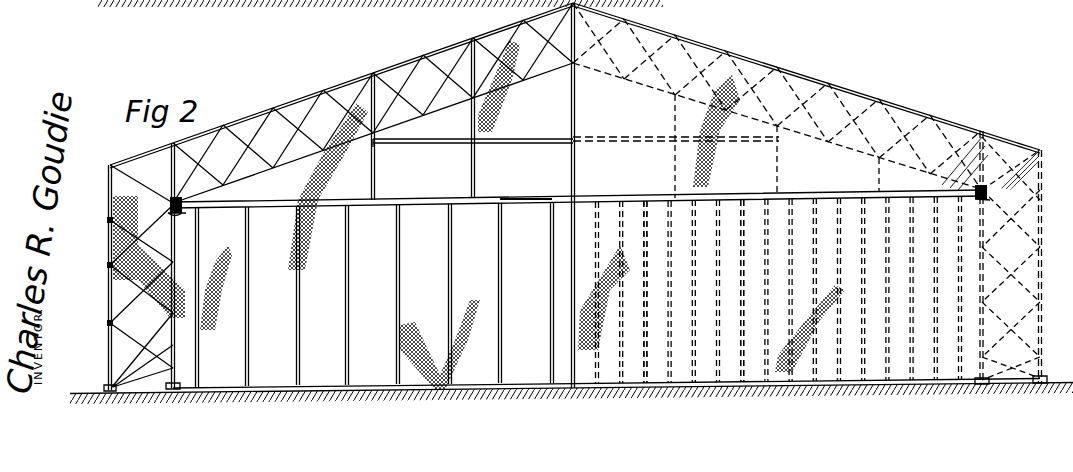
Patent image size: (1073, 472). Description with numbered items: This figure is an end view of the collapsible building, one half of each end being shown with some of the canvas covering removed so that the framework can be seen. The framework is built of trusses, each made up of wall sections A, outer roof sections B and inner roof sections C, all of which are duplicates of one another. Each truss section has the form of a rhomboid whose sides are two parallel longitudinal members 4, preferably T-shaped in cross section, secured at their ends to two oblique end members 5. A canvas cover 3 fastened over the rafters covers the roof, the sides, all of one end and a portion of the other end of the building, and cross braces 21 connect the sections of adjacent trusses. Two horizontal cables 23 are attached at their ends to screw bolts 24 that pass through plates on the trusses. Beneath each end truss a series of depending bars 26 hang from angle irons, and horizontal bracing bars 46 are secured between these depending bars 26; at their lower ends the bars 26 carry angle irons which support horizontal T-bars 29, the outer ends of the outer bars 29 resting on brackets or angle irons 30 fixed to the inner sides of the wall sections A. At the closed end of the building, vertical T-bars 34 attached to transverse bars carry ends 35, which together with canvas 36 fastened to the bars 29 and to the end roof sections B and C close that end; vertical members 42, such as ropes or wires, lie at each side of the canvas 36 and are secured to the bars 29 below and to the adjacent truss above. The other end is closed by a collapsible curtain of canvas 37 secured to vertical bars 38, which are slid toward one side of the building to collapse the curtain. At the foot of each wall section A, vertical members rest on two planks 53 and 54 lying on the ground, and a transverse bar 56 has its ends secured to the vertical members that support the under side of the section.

The canvas cover 3 is at (356, 82).
The longitudinal members 4 is at (247, 172).
The end members 5 is at (406, 97).
The cross braces 21 is at (132, 321).
The horizontal cables 23 is at (811, 196).
The screw bolts 24 is at (177, 208).
The depending bars 26 is at (375, 166).
The horizontal T-bars 29 is at (418, 200).
The brackets or angle irons 30 is at (178, 212).
The vertical T-bars 34 is at (449, 241).
The ends 35 is at (536, 204).
The canvas 36 is at (455, 176).
The canvas 37 is at (657, 212).
The vertical bars 38 is at (734, 202).
The vertical members 42 is at (878, 179).
The horizontal bracing bars 46 is at (535, 138).
The plank 53 is at (182, 388).
The plank 54 is at (110, 391).
The transverse bar 56 is at (185, 370).
The wall sections A is at (108, 193).
The outer roof sections B is at (298, 105).
The inner roof sections C is at (404, 72).